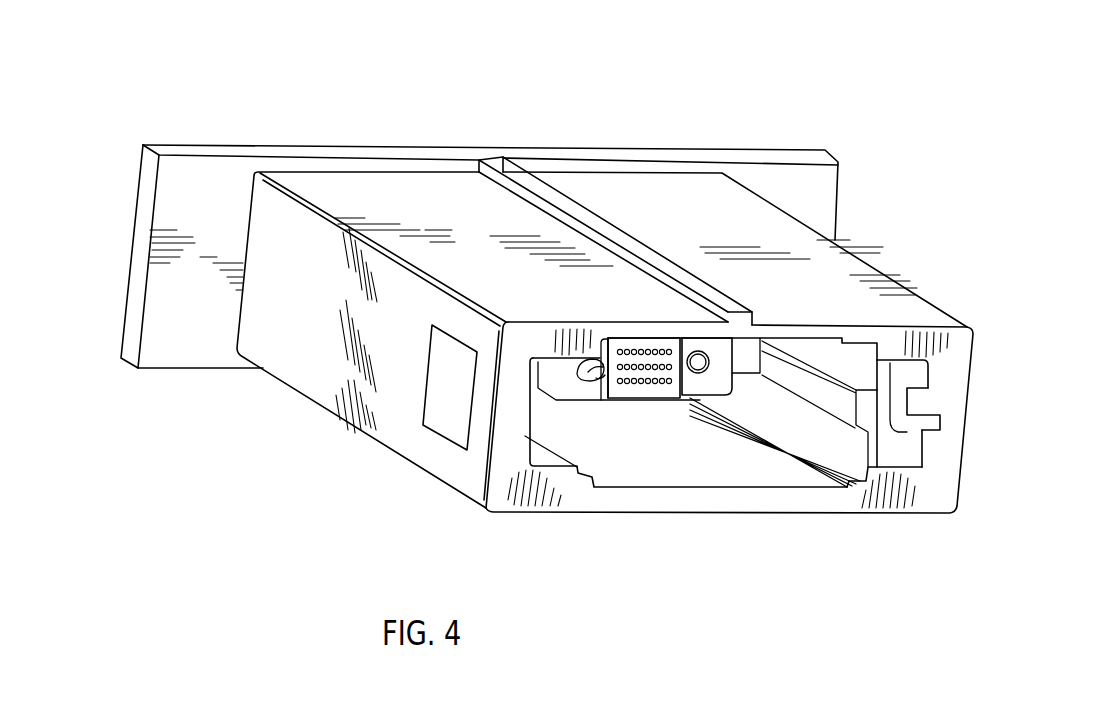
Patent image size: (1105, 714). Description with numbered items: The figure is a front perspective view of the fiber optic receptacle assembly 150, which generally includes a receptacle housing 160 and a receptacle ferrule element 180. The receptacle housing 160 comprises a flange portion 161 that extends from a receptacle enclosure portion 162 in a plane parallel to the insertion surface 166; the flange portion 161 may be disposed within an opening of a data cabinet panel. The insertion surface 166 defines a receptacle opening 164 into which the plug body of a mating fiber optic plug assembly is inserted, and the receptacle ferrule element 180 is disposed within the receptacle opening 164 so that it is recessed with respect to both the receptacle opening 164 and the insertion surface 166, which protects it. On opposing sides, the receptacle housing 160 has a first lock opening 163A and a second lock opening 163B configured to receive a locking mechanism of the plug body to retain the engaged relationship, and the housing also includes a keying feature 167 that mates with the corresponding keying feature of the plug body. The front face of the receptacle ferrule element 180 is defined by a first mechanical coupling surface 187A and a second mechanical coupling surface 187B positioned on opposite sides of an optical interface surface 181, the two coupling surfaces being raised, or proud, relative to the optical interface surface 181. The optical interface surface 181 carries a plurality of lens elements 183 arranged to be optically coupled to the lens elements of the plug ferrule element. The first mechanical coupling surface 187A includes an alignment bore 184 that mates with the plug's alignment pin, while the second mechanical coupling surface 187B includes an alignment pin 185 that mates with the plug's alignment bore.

The fiber optic receptacle assembly 150 is at (564, 307).
The receptacle housing 160 is at (578, 347).
The flange portion 161 is at (450, 256).
The receptacle enclosure portion 162 is at (737, 242).
The first lock opening 163A is at (971, 447).
The second lock opening 163B is at (403, 424).
The receptacle opening 164 is at (806, 497).
The insertion surface 166 is at (742, 468).
The keying feature 167 is at (963, 461).
The receptacle ferrule element 180 is at (671, 385).
The optical interface surface 181 is at (675, 385).
The lens elements 183 is at (598, 453).
The alignment bore 184 is at (775, 329).
The alignment pin 185 is at (574, 337).
The first mechanical coupling surface 187A is at (773, 333).
The second mechanical coupling surface 187B is at (651, 459).